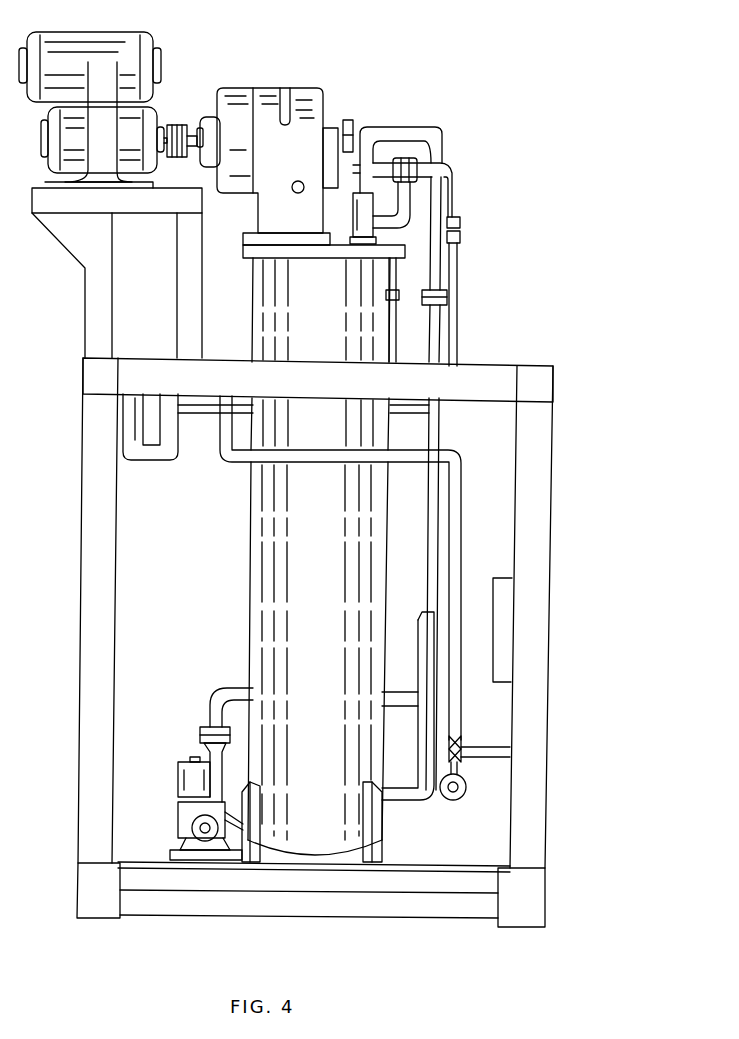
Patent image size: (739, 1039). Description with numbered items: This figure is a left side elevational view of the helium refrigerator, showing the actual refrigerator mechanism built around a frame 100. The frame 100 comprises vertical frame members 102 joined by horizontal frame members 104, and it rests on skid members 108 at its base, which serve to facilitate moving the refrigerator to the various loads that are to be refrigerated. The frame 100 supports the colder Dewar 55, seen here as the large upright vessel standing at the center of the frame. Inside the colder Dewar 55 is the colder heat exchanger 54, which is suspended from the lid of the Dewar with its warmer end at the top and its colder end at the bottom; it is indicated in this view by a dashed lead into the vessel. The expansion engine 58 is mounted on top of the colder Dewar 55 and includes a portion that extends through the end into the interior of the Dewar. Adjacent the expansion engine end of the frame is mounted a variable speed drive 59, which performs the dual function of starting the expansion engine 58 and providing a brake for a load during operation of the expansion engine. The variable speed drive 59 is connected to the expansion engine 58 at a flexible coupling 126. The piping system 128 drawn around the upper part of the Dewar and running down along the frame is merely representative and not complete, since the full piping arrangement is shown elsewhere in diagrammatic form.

The colder heat exchanger 54 is at (297, 503).
The colder Dewar 55 is at (252, 290).
The expansion engine 58 is at (305, 93).
The variable speed drive 59 is at (77, 40).
The frame 100 is at (553, 375).
The vertical frame members 102 is at (84, 629).
The horizontal frame members 104 is at (511, 378).
The skid members 108 is at (80, 895).
The flexible coupling 126 is at (177, 125).
The piping system 128 is at (454, 166).